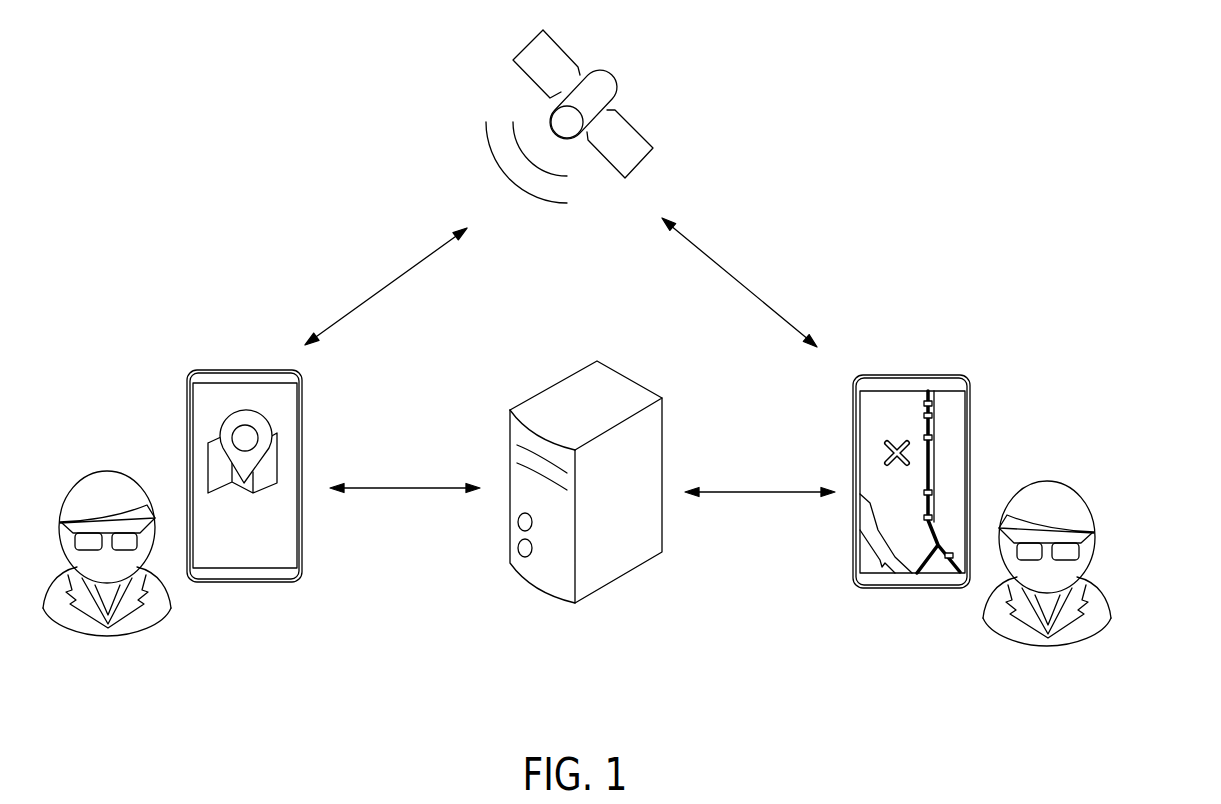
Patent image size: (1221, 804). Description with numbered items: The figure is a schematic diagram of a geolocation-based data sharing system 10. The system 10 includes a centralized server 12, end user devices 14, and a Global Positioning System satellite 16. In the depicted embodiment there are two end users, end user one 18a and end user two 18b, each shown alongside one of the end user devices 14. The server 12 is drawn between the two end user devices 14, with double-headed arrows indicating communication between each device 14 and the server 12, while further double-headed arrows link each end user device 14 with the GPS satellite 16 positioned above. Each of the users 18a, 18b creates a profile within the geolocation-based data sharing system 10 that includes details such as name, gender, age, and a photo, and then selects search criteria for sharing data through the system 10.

The geolocation-based data sharing system 10 is at (874, 116).
The centralized server 12 is at (615, 560).
The end user devices 14 is at (302, 420).
The Global Positioning System (GPS) satellite 16 is at (603, 83).
The end user one 18a is at (172, 610).
The end user two 18b is at (1112, 620).